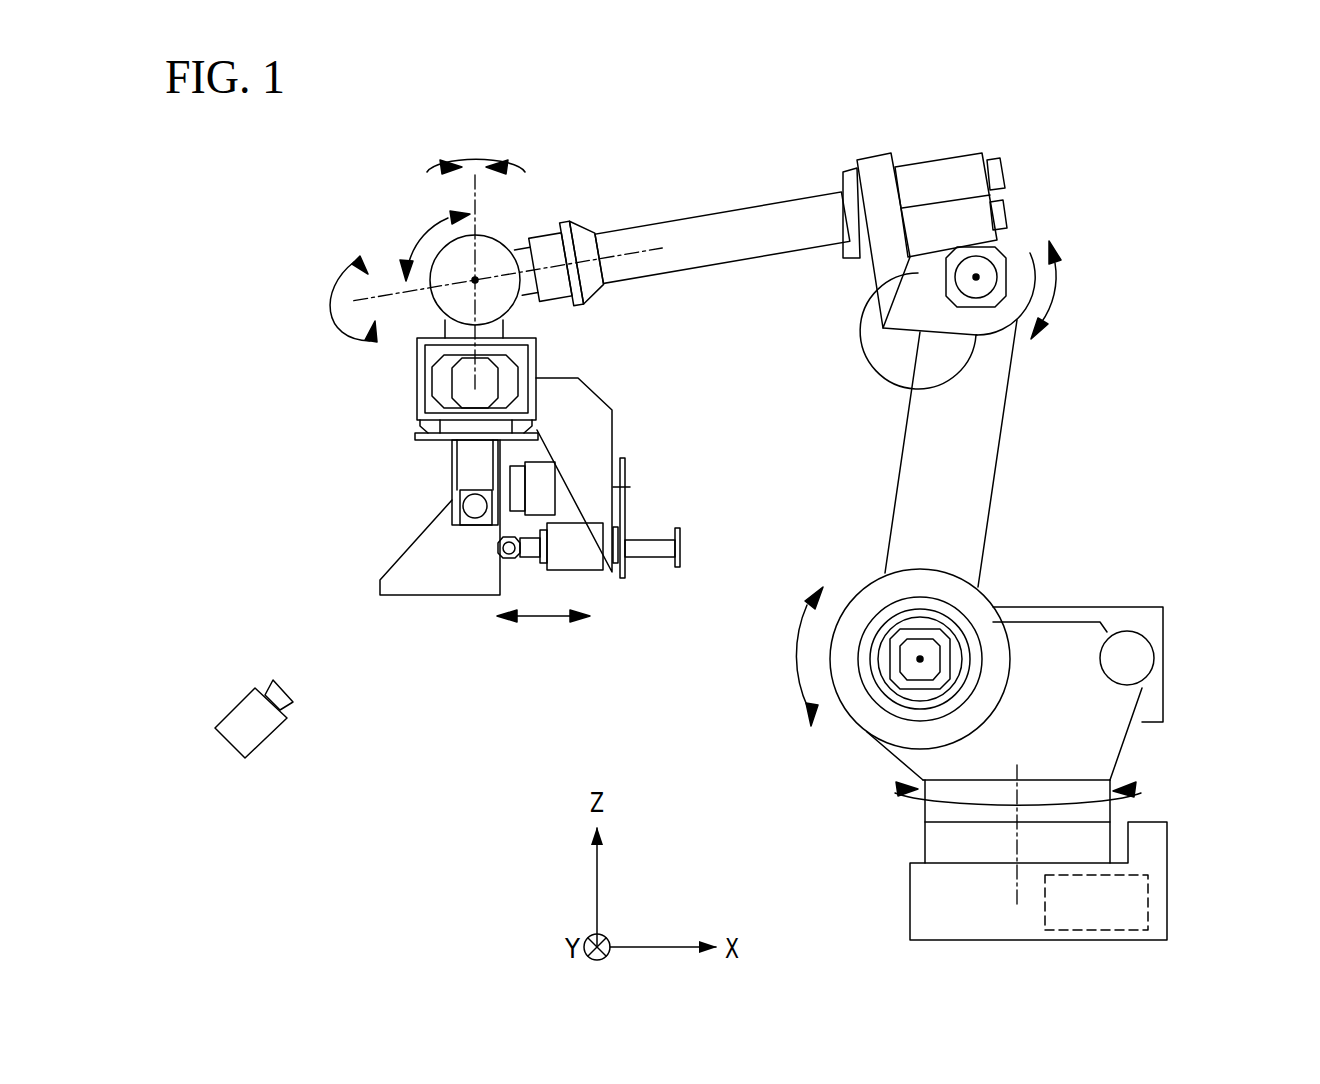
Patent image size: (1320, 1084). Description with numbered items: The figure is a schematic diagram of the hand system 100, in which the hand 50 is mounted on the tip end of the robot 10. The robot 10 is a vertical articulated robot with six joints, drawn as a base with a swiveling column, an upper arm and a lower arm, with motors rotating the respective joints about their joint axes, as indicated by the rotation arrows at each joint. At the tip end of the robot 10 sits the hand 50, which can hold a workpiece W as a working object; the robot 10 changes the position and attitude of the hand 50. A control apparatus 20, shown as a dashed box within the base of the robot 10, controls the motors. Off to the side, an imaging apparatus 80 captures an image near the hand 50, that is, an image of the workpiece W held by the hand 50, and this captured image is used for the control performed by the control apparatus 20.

The hand system 100 is at (1079, 142).
The robot 10 is at (1034, 432).
The control apparatus 20 is at (1148, 899).
The hand 50 is at (382, 434).
The imaging apparatus 80 is at (233, 708).
The workpiece W is at (444, 595).